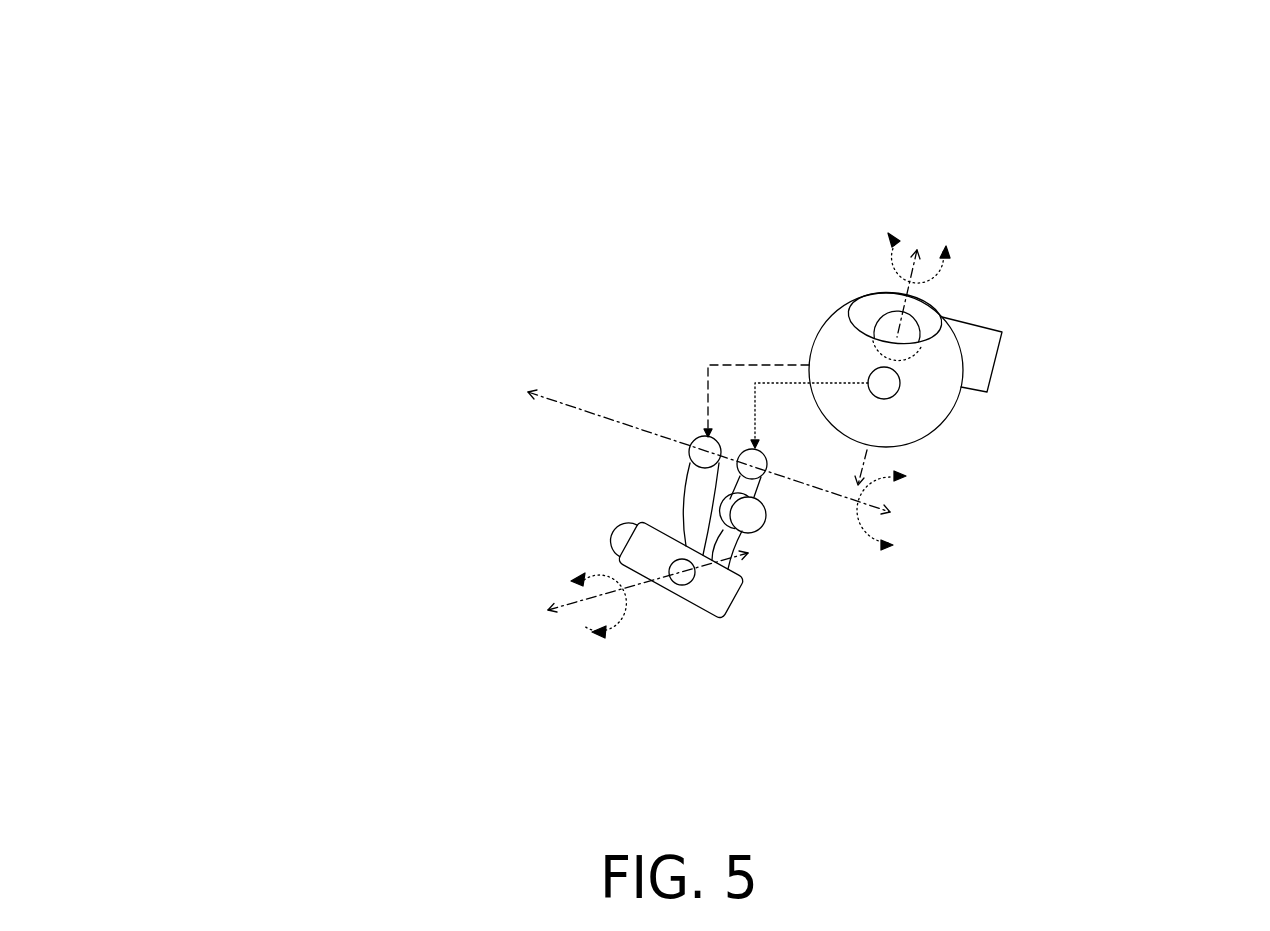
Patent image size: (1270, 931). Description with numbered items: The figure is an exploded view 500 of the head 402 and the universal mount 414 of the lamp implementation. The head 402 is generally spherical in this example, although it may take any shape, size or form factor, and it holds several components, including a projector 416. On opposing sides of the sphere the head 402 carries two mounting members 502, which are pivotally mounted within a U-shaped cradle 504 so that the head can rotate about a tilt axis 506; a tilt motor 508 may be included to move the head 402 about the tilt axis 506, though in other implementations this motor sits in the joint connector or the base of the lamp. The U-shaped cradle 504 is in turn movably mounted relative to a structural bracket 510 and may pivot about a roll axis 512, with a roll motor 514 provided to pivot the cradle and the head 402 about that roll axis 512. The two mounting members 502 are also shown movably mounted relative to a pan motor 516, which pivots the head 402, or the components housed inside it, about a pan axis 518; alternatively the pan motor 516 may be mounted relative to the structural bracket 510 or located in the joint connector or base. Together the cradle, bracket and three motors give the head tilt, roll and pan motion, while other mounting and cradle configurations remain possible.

The head 402 is at (809, 240).
The universal mount 414 is at (486, 424).
The projector 416 is at (200, 97).
The exploded view 500 is at (1182, 168).
The mounting members 502 is at (821, 351).
The U-shaped cradle 504 is at (658, 495).
The tilt axis 506 is at (785, 475).
The tilt motor 508 is at (770, 509).
The structural bracket 510 is at (657, 548).
The roll axis 512 is at (580, 594).
The roll motor 514 is at (592, 529).
The pan motor 516 is at (938, 317).
The pan axis 518 is at (885, 320).